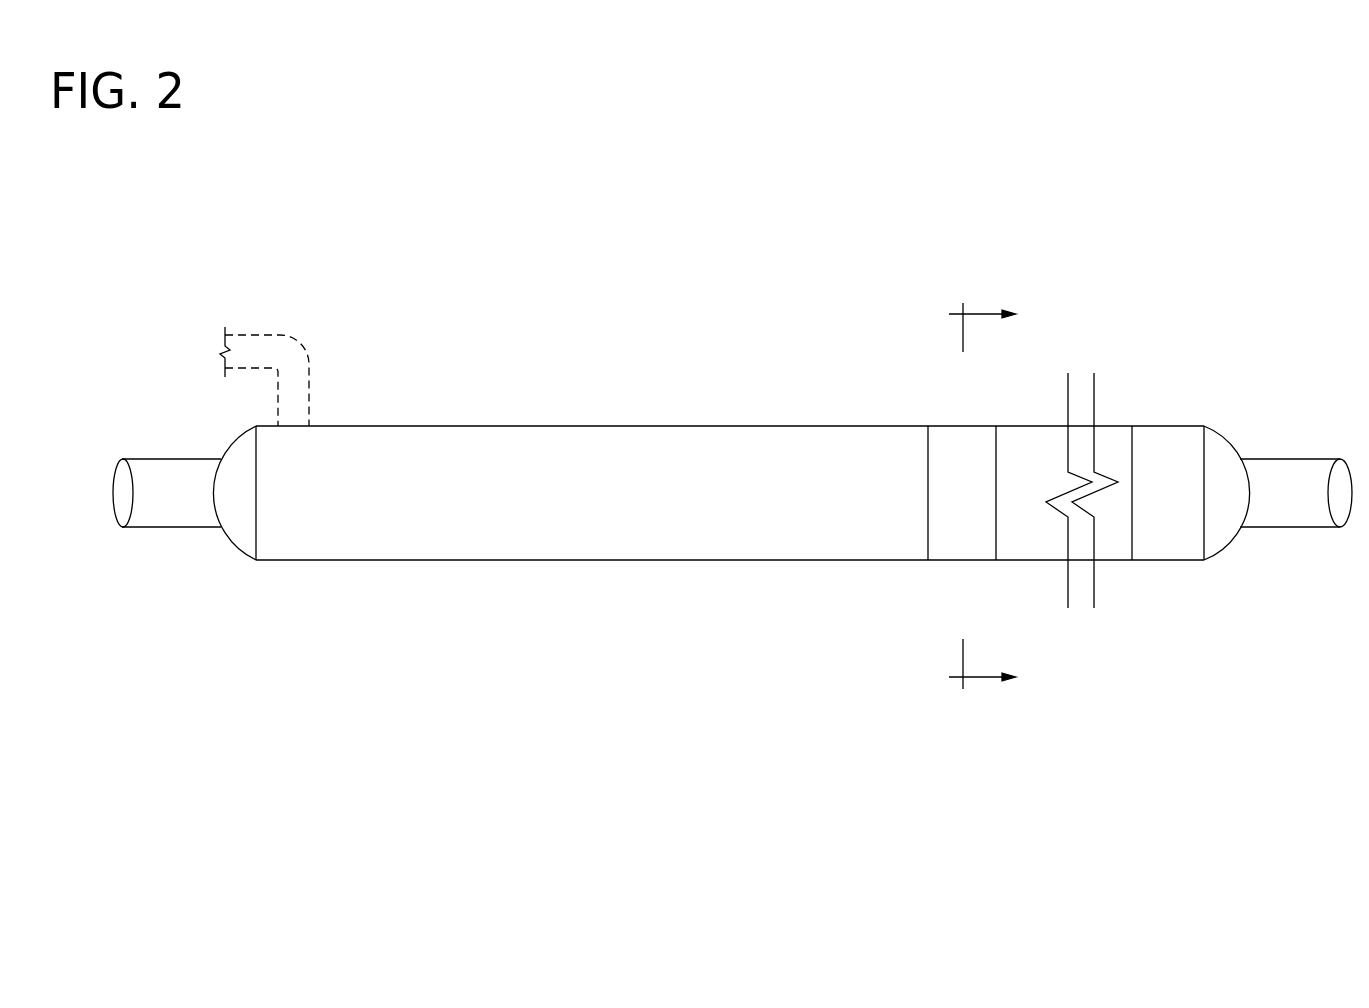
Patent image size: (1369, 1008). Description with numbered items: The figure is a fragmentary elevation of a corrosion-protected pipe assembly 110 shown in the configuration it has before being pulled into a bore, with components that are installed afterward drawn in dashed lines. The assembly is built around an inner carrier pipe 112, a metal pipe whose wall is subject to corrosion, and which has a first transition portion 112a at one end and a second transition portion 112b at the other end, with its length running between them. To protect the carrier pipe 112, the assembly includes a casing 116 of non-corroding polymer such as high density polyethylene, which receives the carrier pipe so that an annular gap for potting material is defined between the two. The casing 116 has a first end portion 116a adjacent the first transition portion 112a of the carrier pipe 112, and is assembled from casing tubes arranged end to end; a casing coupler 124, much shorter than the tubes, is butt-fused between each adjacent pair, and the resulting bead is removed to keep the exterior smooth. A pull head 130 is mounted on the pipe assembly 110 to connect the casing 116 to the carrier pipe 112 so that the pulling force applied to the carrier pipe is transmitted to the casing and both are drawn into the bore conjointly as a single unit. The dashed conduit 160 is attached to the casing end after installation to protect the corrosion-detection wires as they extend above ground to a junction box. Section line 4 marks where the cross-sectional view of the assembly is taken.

The corrosion-protected pipe assembly 110 is at (321, 765).
The inner carrier pipe 112 is at (170, 528).
The first transition portion 112a is at (1293, 517).
The second transition portion 112b is at (167, 468).
The casing 116 is at (728, 568).
The first end portion of the casing 116a is at (275, 548).
The casing coupler 124 is at (963, 424).
The pull head 130 is at (1164, 566).
The conduit 160 is at (298, 343).
The section line 4- 4 is at (975, 494).